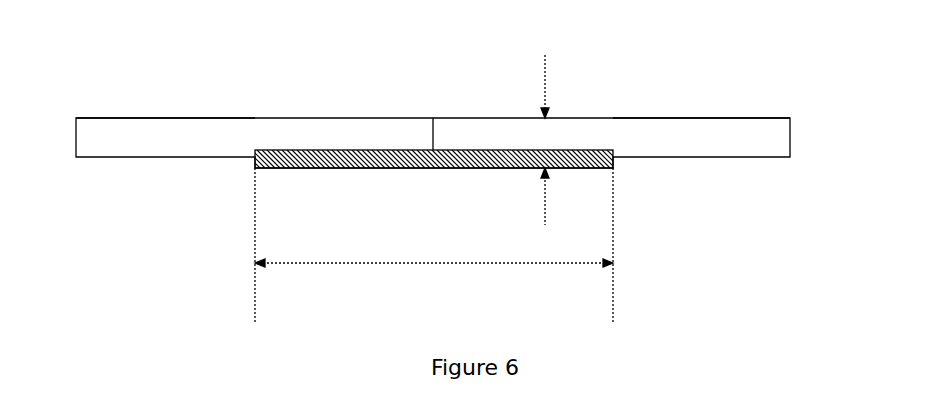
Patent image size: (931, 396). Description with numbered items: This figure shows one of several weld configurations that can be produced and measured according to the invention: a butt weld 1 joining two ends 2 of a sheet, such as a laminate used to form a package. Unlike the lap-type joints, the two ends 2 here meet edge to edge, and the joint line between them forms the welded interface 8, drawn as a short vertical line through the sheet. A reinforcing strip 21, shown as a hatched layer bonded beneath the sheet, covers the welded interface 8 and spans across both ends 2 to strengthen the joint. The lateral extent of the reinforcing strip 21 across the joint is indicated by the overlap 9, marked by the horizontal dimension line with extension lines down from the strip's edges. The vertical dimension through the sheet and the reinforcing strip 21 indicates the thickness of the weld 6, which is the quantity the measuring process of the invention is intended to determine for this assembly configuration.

The weld 1 is at (308, 86).
The ends of the sheet 2 is at (183, 140).
The thickness of the weld 6 is at (545, 130).
The welded interface 8 is at (435, 138).
The overlap 9 is at (434, 245).
The reinforcing strip 21 is at (277, 152).